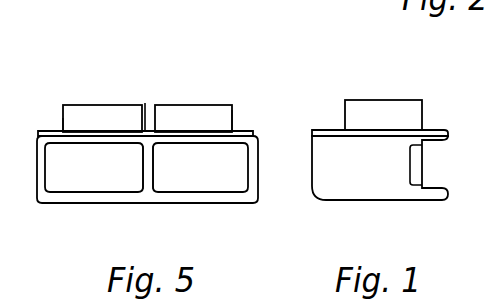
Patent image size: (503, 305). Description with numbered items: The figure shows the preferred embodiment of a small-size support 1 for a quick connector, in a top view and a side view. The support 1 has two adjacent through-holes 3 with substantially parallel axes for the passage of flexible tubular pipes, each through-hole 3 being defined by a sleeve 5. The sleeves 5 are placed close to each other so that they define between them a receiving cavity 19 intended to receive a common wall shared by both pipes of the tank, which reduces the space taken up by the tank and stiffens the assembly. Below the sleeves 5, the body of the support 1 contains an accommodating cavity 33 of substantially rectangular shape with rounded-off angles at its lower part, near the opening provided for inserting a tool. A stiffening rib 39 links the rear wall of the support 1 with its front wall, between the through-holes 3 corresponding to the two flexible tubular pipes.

In FIG. 5, the connector support 1 is at (174, 83).
In FIG. 1, the connector support 1 is at (331, 78).
In FIG. 5, the through-hole 3 is at (102, 105).
In FIG. 5, the sleeve 5 is at (63, 118).
In FIG. 1, the sleeve 5 is at (422, 111).
In FIG. 5, the receiving cavity 19 is at (146, 106).
In FIG. 5, the accommodating cavity 33 is at (84, 186).
In FIG. 1, the accommodating cavity 33 is at (415, 162).
In FIG. 5, the stiffening rib 39 is at (146, 160).